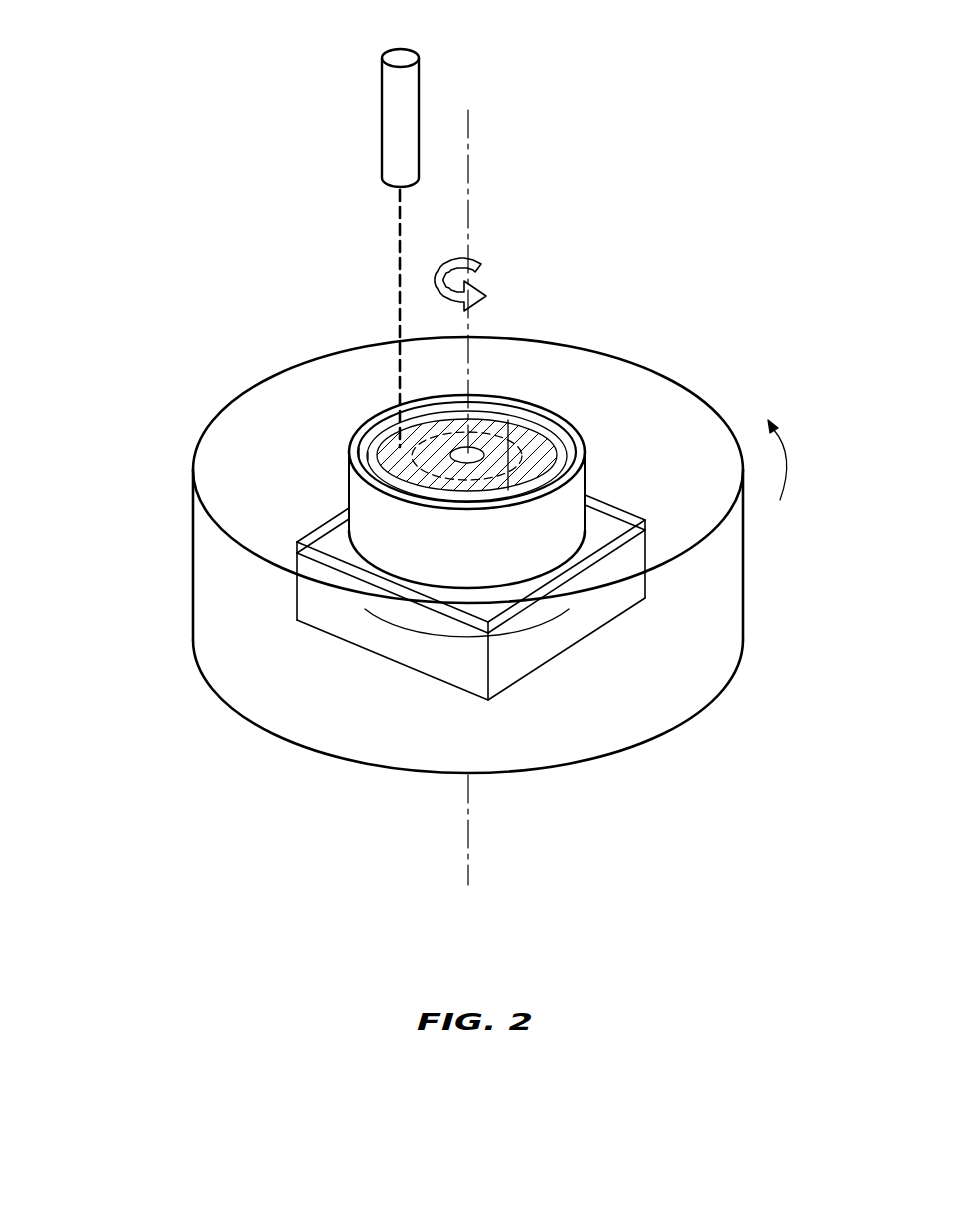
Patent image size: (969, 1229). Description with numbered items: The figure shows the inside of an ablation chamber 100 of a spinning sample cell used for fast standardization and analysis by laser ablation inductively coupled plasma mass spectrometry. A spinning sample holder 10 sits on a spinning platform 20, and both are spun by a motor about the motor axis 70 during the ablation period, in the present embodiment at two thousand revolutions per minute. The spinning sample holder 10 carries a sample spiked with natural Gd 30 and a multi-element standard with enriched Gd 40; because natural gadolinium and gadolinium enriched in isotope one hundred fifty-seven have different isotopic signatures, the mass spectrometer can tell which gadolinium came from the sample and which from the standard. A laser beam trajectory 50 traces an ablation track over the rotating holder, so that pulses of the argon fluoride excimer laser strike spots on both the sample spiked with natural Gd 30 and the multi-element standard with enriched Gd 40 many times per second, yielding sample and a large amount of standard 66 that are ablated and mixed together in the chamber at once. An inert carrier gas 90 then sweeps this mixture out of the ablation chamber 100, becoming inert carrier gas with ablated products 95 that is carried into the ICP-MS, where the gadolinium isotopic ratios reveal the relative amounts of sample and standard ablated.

The ablation chamber 100 is at (172, 226).
The inert carrier gas with ablated products 95 is at (228, 358).
The inert carrier gas 90 is at (786, 458).
The spinning platform 20 is at (594, 651).
The spinning sample holder 10 is at (441, 535).
The sample spiked with natural Gd 30 is at (566, 446).
The sample and a large amount of standard 66 is at (410, 496).
The multi-element standard with enriched Gd(157) 40 is at (415, 468).
The laser beam trajectory 50 is at (400, 265).
The motor axis 70 is at (470, 188).